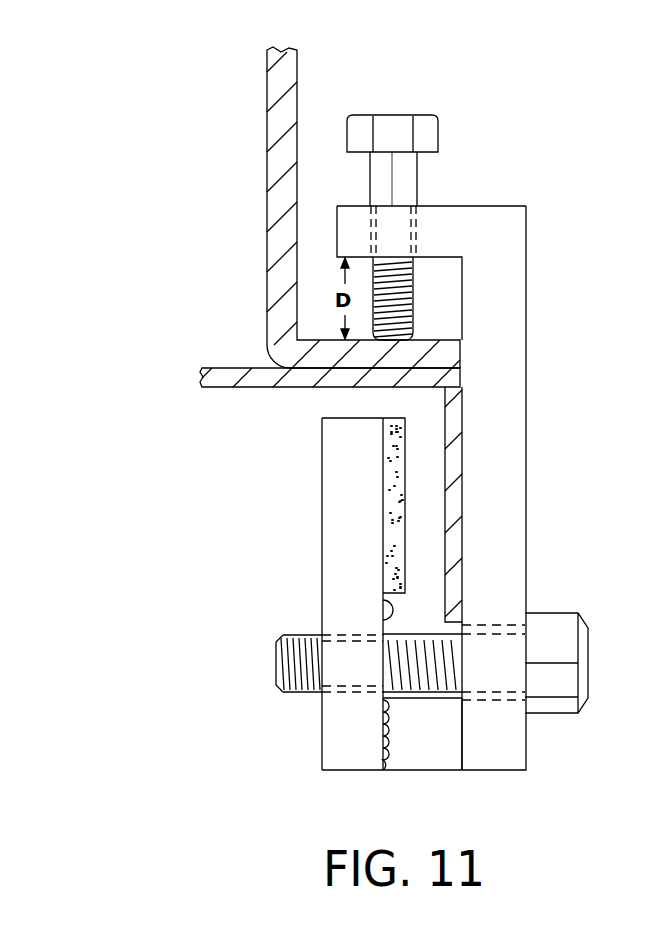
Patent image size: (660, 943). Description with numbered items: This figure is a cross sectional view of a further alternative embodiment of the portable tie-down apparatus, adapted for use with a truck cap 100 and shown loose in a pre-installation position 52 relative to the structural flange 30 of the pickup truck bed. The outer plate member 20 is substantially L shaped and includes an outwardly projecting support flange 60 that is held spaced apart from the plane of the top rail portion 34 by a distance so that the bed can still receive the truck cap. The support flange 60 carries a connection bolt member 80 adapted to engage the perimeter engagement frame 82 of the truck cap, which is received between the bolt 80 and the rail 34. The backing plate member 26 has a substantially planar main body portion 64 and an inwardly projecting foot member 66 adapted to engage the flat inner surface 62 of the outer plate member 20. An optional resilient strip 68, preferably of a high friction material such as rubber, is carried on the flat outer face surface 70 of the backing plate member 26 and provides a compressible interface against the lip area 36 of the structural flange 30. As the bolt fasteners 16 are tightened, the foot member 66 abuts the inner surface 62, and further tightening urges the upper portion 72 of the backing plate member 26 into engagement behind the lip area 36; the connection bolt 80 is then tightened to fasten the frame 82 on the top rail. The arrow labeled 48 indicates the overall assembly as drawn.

The truck cap 100 is at (284, 72).
The connection bolt member 80 is at (421, 135).
The support flange 60 is at (465, 212).
The bracket assembly 48 is at (484, 465).
The perimeter engagement frame 82 is at (433, 334).
The outer plate member 20 is at (510, 381).
The top rail portion 34 is at (225, 375).
The structural flange 30 is at (276, 358).
The lip area 36 is at (453, 448).
The upper portion 72 is at (302, 457).
The backing plate member 26 is at (337, 625).
The resilient strip 68 is at (392, 545).
The main body portion 64 is at (353, 563).
The flat outer face surface 70 is at (384, 622).
The bolt fasteners 16 is at (560, 638).
The pre-installation position 52 is at (337, 625).
The foot member 66 is at (410, 743).
The flat inner surface 62 is at (457, 750).